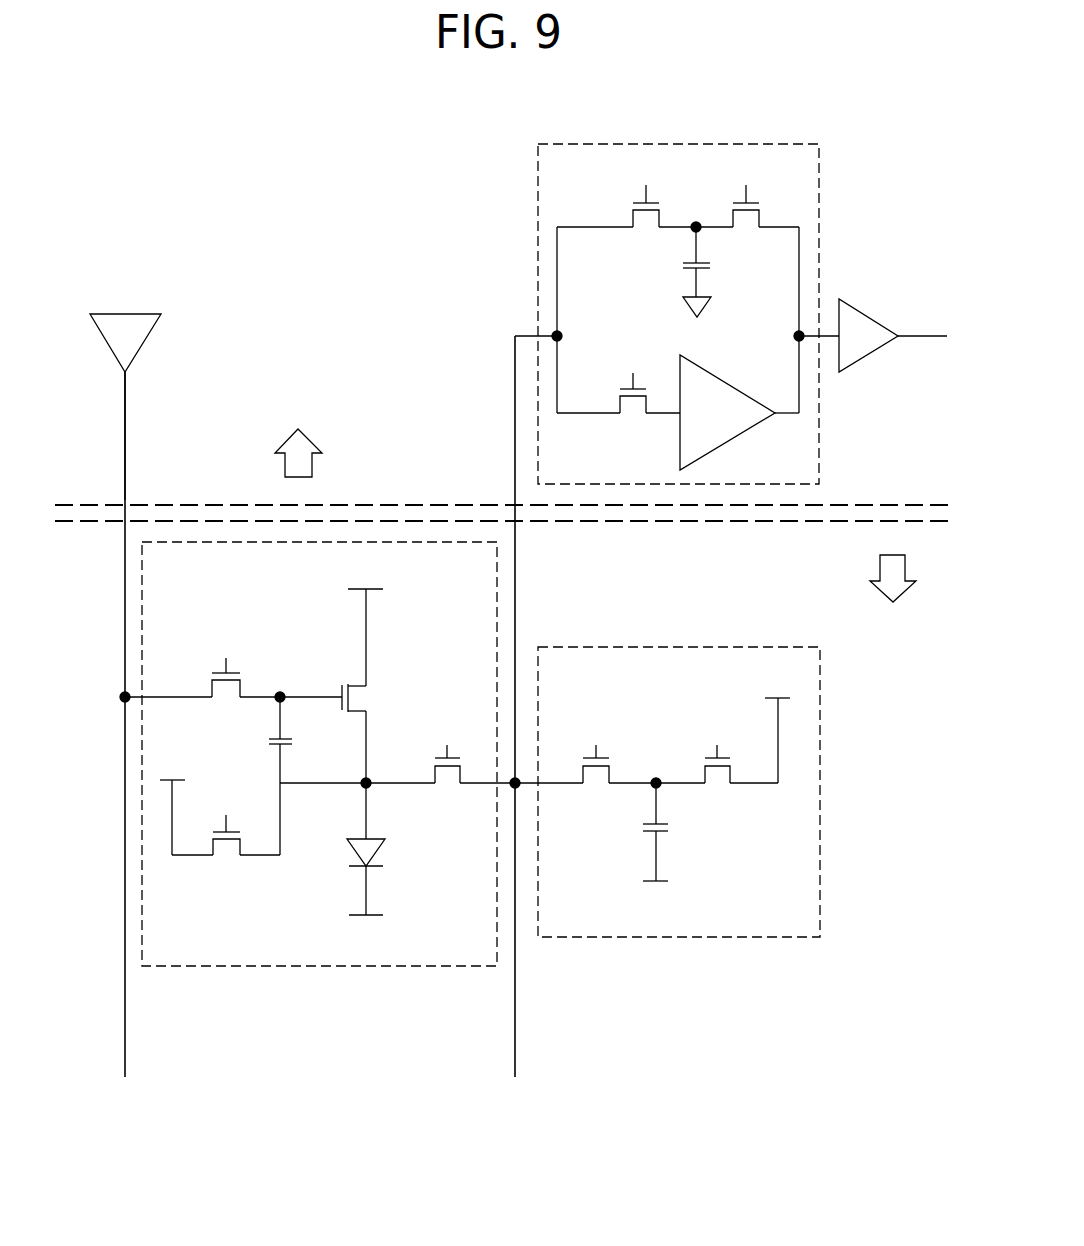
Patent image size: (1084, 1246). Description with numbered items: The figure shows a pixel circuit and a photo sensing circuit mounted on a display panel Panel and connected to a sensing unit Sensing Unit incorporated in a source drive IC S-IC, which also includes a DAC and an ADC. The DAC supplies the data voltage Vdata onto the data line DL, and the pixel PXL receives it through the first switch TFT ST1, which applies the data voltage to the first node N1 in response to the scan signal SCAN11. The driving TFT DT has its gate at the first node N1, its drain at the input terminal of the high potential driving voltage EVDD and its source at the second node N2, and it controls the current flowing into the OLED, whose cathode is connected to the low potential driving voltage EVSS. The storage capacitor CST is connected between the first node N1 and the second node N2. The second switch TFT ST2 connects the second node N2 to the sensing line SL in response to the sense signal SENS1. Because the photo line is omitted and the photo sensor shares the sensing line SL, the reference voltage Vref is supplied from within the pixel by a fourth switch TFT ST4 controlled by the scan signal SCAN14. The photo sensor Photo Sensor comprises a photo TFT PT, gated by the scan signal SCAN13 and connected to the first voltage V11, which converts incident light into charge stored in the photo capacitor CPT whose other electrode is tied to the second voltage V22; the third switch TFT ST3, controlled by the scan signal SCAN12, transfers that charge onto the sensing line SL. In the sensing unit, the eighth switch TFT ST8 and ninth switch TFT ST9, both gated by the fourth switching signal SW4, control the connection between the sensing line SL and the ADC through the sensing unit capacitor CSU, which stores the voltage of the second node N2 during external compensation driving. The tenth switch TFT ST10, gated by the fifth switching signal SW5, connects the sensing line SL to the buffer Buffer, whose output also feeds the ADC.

The element DAC is at (125, 343).
The data voltage Vdata is at (161, 436).
The data line DL is at (125, 614).
The sensing line SL is at (515, 1000).
The source drive IC S-IC is at (301, 437).
The display panel Panel is at (891, 591).
The sensing unit Sensing Unit is at (538, 190).
The fourth switching signal SW4 is at (695, 169).
The fifth switching signal SW5 is at (631, 357).
The eighth switch TFT ST8 is at (645, 221).
The ninth switch TFT ST9 is at (746, 221).
The tenth switch TFT ST10 is at (636, 408).
The sensing unit capacitor CSU is at (679, 272).
The buffer Buffer is at (727, 412).
The element ADC is at (848, 335).
The pixel circuit PXL is at (297, 966).
The first switch TFT ST1 is at (227, 691).
The second switch TFT ST2 is at (447, 780).
The fourth switch TFT ST4 is at (244, 851).
The driving TFT DT is at (368, 686).
The storage capacitor CST is at (262, 776).
The organic light emitting diode OLED is at (393, 849).
The high potential driving voltage EVDD is at (367, 573).
The low potential driving voltage EVSS is at (369, 930).
The reference voltage Vref is at (181, 804).
The first node N1 is at (300, 675).
The second node N2 is at (344, 762).
The scan signal SCAN11 is at (230, 642).
The scan signal SCAN14 is at (231, 799).
The sense signal SENS1 is at (453, 729).
The photo sensor Photo Sensor is at (724, 937).
The third switch TFT ST3 is at (595, 780).
The photo TFT PT is at (718, 780).
The photo capacitor CPT is at (674, 832).
The scan signal SCAN12 is at (595, 729).
The scan signal SCAN13 is at (715, 729).
The first voltage V11 is at (776, 727).
The second voltage V22 is at (656, 897).